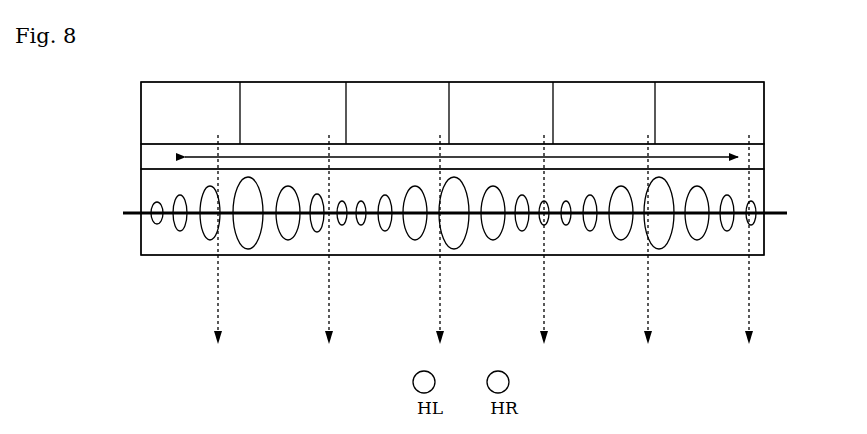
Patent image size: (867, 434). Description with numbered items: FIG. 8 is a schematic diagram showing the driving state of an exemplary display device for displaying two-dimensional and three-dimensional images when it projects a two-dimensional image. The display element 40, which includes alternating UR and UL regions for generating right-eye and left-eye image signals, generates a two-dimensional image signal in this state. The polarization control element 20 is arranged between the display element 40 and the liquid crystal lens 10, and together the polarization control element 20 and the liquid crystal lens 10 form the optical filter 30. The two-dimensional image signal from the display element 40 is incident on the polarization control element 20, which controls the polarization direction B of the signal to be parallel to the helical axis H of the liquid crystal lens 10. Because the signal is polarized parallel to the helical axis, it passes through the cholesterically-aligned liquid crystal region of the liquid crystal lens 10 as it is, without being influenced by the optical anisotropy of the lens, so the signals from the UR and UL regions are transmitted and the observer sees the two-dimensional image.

The liquid crystal lens 10 is at (760, 190).
The polarization control element 20 is at (762, 160).
The optical filter 30 is at (828, 165).
The display element 40 is at (758, 103).